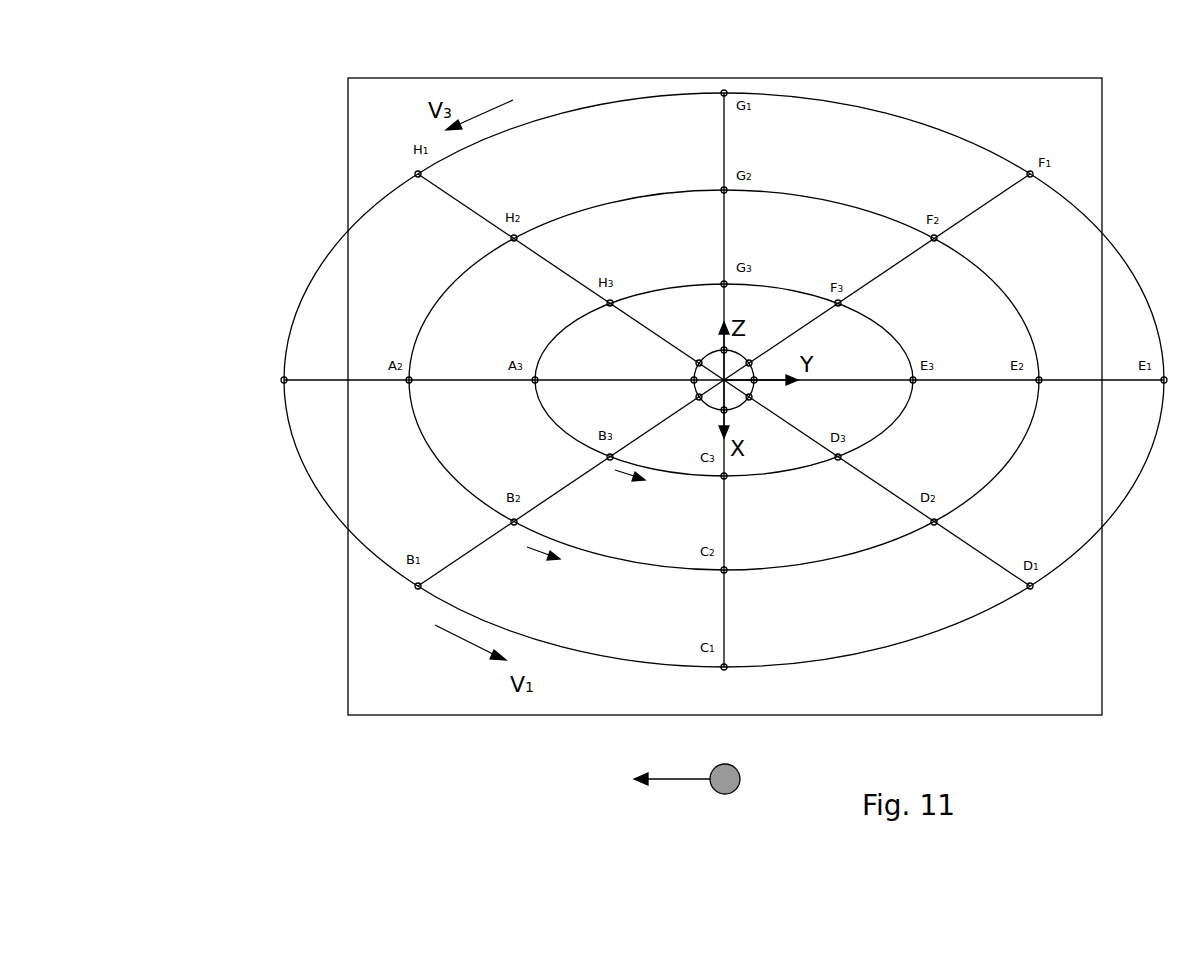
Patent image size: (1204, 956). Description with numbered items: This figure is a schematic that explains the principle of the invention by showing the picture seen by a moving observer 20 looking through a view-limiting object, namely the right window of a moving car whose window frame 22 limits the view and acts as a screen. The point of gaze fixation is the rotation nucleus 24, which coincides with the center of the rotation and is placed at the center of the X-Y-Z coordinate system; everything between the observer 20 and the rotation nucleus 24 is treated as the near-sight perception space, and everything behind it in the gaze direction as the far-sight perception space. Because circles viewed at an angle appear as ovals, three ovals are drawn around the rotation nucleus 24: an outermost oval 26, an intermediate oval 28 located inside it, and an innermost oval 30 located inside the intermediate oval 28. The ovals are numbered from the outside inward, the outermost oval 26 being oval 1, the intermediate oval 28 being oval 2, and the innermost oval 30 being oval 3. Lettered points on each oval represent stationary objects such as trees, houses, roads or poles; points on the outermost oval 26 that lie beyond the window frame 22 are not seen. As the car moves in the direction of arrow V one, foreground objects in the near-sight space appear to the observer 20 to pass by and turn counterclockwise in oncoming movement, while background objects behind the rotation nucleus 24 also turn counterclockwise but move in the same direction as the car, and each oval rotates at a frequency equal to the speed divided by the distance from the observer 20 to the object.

The observer 20 is at (737, 766).
The window frame 22 is at (347, 172).
The rotation nucleus 24 is at (742, 354).
The outermost oval 26 is at (388, 190).
The intermediate oval 28 is at (582, 208).
The innermost oval 30 is at (677, 286).
The outer zone 1 is at (724, 346).
The middle zone 2 is at (724, 298).
The inner zone 3 is at (724, 251).